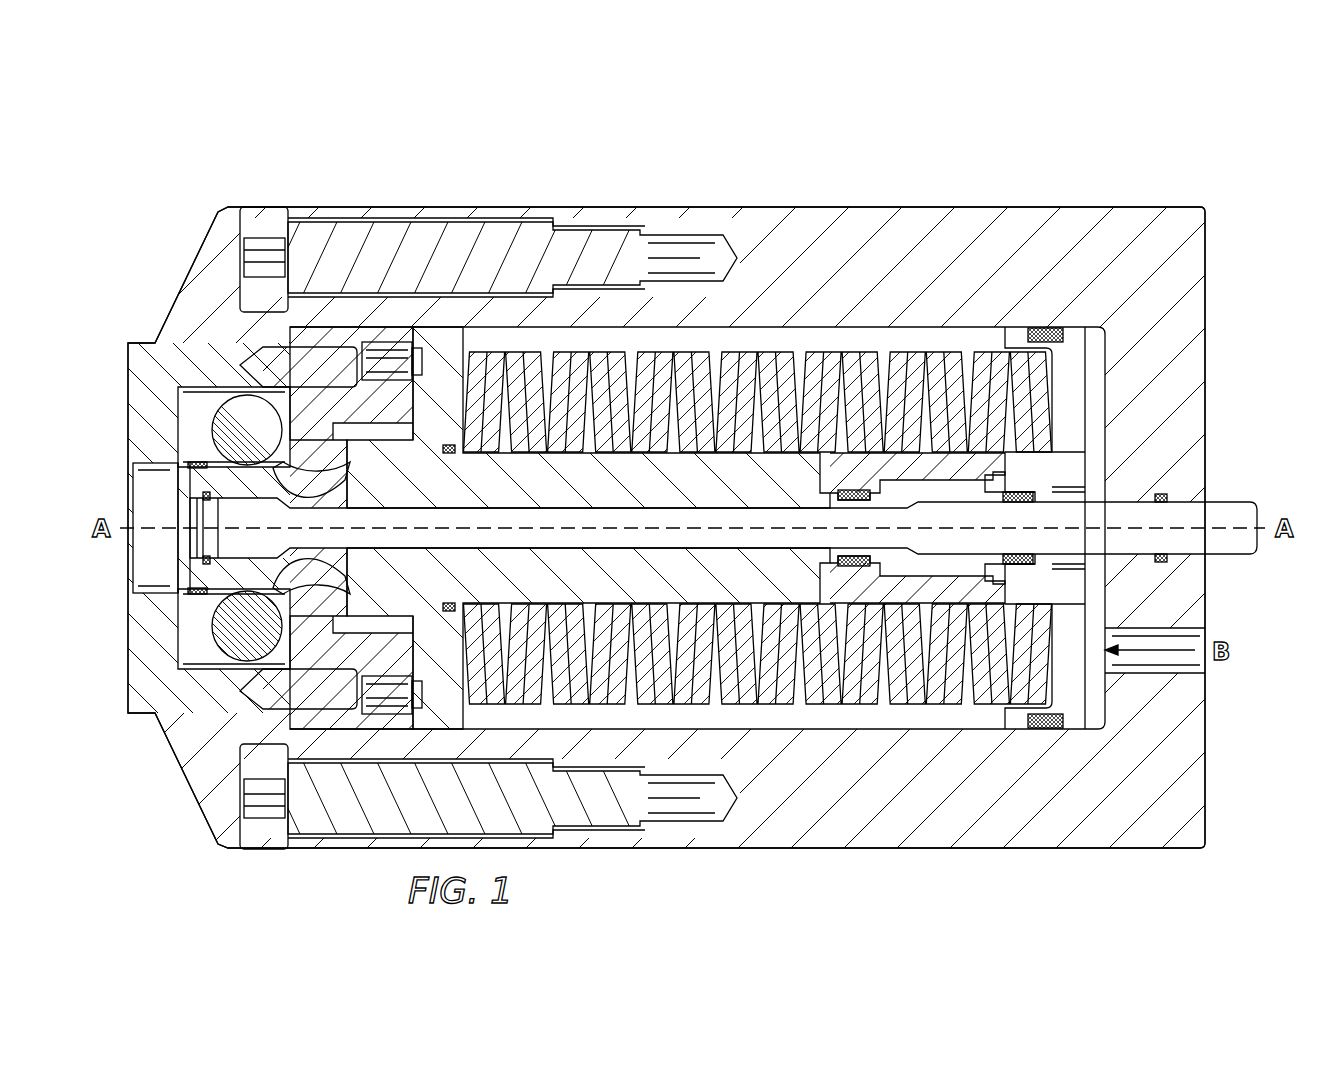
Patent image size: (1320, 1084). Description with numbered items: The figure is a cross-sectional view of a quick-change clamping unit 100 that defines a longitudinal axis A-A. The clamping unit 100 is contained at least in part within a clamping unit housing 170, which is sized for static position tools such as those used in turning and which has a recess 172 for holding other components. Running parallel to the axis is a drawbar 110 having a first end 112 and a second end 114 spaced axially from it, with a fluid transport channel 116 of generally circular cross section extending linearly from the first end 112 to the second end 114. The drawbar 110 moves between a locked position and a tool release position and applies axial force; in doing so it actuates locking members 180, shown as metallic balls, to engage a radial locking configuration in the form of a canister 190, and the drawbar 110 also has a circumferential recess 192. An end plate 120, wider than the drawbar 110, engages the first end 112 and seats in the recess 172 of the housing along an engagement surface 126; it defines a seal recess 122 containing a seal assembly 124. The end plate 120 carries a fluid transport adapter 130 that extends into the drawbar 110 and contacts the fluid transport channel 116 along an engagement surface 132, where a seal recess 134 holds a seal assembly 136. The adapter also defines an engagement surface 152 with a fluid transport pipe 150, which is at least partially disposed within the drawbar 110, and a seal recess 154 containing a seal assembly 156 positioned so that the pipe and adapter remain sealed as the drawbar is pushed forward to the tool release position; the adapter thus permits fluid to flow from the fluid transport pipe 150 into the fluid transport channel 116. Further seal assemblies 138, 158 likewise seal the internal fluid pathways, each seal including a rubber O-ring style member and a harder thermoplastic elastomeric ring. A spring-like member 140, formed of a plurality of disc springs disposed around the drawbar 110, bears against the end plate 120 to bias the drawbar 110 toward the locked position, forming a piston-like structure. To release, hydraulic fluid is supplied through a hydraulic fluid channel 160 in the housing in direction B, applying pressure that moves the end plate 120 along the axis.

The clamping unit 100 is at (501, 158).
The drawbar 110 is at (713, 512).
The first end 112 is at (1097, 410).
The second end 114 is at (164, 478).
The fluid transport channel 116 is at (413, 512).
The end plate 120 is at (1072, 340).
The seal recess 122 is at (1050, 330).
The seal assembly 124 is at (1030, 560).
The engagement surface 126 is at (1000, 726).
The fluid transport adapter 130 is at (900, 487).
The engagement surface 132 is at (870, 575).
The seal recess 134 is at (858, 568).
The seal assembly 136 is at (848, 487).
The seal assembly 138 is at (453, 600).
The spring-like member 140 is at (812, 695).
The fluid transport pipe 150 is at (1167, 556).
The engagement surface 152 is at (998, 568).
The seal recess 154 is at (1048, 462).
The seal assembly 156 is at (1112, 662).
The seal assembly 158 is at (203, 470).
The hydraulic fluid channel 160 is at (1168, 660).
The clamping unit housing 170 is at (1015, 222).
The recess 172 is at (715, 340).
The locking members 180 is at (318, 488).
The canister 190 is at (337, 405).
The circumferential recess 192 is at (247, 416).